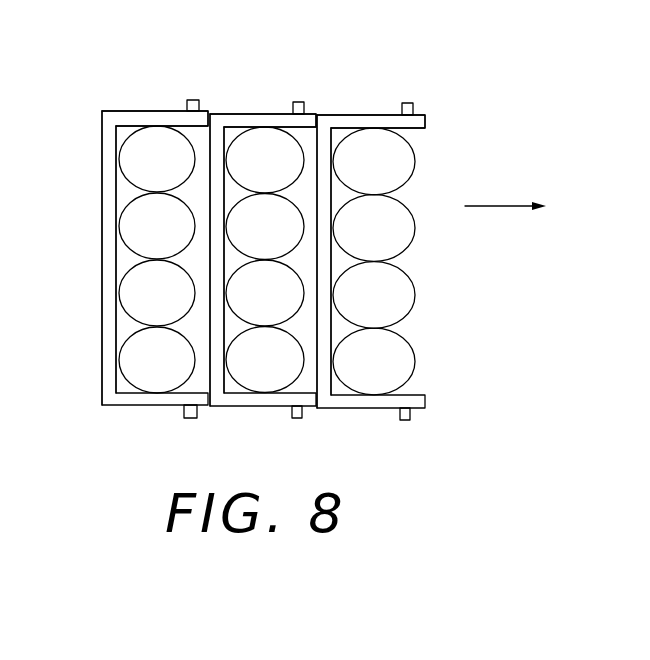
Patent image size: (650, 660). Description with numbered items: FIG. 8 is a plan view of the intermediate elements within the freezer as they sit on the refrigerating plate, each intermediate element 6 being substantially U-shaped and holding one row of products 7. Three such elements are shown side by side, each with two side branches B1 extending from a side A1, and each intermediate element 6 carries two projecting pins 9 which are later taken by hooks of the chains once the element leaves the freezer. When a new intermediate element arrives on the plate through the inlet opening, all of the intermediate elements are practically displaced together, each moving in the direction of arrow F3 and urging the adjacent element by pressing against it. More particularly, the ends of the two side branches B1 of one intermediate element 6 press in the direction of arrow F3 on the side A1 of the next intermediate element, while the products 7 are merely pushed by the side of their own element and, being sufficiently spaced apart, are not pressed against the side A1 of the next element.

The side branches B1 is at (127, 122).
The intermediate element 6 is at (150, 111).
The side of intermediate element A1 is at (110, 182).
The products 7 is at (145, 232).
The projecting pins 9 is at (193, 100).
The arrow F3 is at (505, 192).